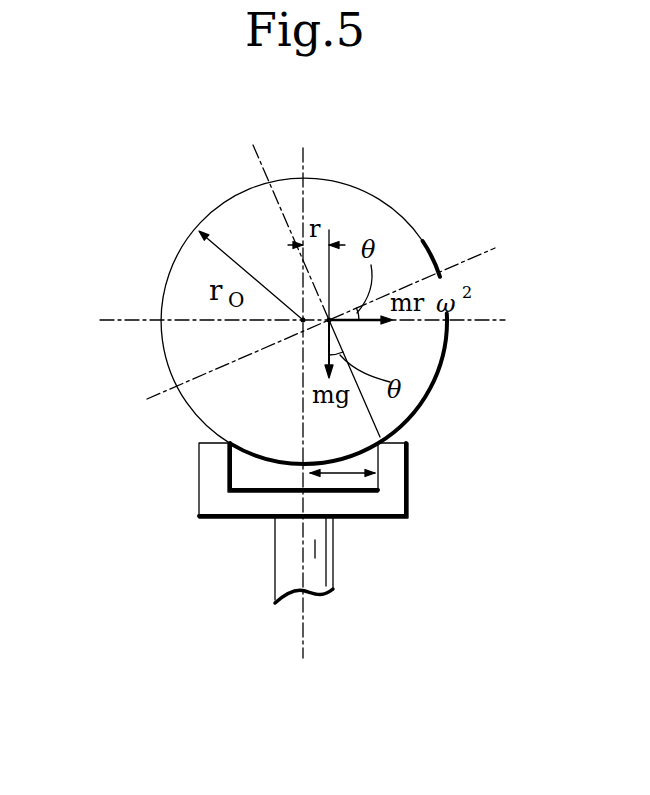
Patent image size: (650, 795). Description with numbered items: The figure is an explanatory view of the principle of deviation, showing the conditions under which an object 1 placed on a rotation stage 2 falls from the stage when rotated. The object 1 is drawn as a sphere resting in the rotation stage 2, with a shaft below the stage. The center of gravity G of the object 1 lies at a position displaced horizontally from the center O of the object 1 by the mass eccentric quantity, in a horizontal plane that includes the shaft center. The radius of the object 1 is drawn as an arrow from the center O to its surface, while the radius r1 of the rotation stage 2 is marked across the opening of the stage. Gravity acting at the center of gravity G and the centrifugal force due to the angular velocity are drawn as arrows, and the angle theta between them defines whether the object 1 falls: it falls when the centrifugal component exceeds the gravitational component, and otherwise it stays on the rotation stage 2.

The object 1 is at (436, 242).
The rotation stage 2 is at (420, 486).
The center of the object O is at (287, 322).
The center of gravity of the object G is at (335, 325).
The radius of the rotation stage r1 is at (352, 474).